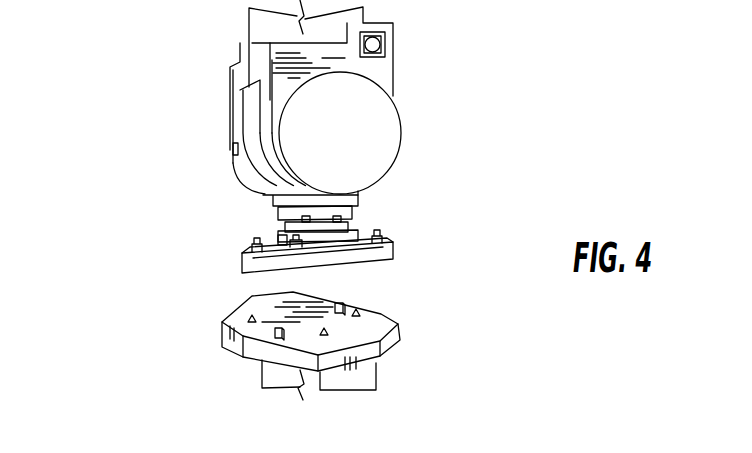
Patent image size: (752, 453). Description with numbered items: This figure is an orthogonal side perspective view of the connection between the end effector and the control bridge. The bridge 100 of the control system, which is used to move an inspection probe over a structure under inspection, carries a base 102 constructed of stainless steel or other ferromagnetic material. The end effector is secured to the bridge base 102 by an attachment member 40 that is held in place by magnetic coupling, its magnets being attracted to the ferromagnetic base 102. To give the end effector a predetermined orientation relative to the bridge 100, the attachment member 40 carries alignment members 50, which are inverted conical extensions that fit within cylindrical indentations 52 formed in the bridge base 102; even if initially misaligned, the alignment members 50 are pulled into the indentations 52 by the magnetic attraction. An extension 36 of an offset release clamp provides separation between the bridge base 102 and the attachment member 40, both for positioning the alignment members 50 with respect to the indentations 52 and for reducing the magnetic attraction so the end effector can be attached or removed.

The extension of offset release clamp 36 is at (352, 302).
The attachment member 40 is at (242, 265).
The alignment members 50 is at (238, 315).
The cylindrical indentations 52 is at (393, 252).
The bridge 100 is at (380, 147).
The bridge base 102 is at (255, 308).